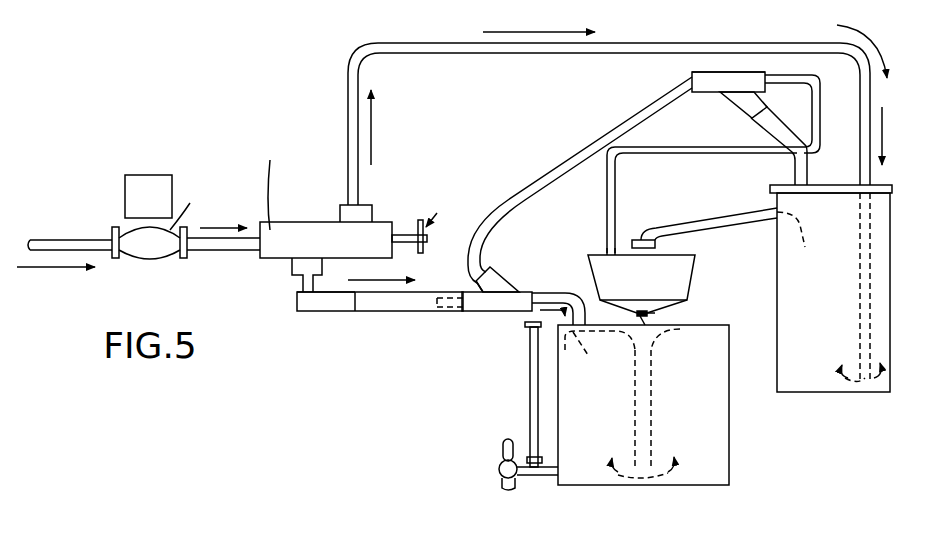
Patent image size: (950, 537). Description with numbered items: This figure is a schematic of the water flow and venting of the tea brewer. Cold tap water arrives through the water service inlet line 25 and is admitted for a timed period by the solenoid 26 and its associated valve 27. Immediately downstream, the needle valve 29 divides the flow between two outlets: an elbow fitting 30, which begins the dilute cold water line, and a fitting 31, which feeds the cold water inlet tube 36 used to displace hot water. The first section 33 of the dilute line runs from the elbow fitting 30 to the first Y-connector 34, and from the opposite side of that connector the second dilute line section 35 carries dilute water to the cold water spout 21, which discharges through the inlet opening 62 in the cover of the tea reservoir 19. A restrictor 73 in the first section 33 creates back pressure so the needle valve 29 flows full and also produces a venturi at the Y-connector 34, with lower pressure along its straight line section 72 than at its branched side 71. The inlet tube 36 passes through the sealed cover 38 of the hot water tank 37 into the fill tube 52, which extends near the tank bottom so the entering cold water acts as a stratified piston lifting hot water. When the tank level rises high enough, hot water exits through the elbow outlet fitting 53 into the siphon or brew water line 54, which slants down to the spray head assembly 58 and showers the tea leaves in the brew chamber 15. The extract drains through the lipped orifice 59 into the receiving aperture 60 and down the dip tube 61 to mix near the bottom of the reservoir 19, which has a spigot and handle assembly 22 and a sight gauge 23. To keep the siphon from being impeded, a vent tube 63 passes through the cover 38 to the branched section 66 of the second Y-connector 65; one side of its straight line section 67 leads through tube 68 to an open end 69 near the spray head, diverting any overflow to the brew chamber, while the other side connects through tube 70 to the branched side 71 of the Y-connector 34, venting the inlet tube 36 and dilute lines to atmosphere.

The brew chamber 15 is at (697, 258).
The tea reservoir 19 is at (729, 446).
The cold water spout 21 is at (584, 306).
The spigot and handle assembly 22 is at (496, 469).
The sight gauge 23 is at (530, 398).
The water service inlet line 25 is at (73, 238).
The solenoid 26 is at (148, 175).
The valve 27 is at (147, 263).
The needle valve 29 is at (312, 219).
The elbow fitting 30 is at (302, 303).
The fitting 31 is at (363, 212).
The first section of dilute line 33 is at (375, 312).
The first Y-connector 34 is at (503, 267).
The second dilute line section 35 is at (545, 292).
The cold water inlet tube 36 is at (653, 42).
The hot water tank 37 is at (887, 312).
The cover 38 is at (885, 183).
The fill tube 52 is at (868, 274).
The elbow outlet fitting 53 is at (799, 243).
The siphon or brew water line 54 is at (722, 215).
The spray head assembly 58 is at (632, 240).
The lipped orifice 59 is at (652, 313).
The receiving aperture 60 is at (657, 324).
The dip tube 61 is at (637, 424).
The inlet opening 62 is at (622, 353).
The vent tube 63 is at (810, 168).
The second Y-connector 65 is at (718, 70).
The branched section 66 is at (740, 105).
The straight line section 67 is at (755, 75).
The tube 68 is at (607, 192).
The open end 69 is at (605, 250).
The tube 70 is at (562, 162).
The branched side 71 is at (478, 281).
The straight line section 72 is at (495, 312).
The restrictor 73 is at (440, 309).